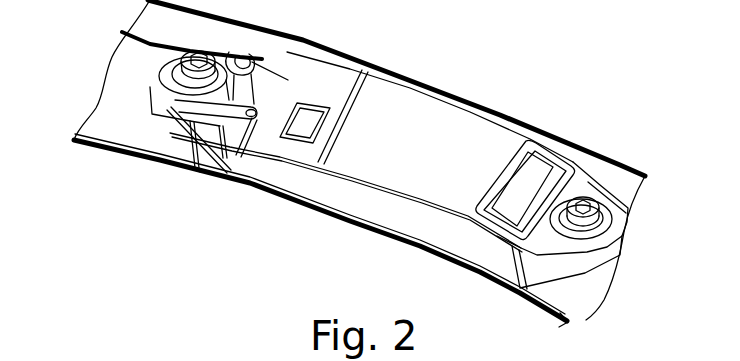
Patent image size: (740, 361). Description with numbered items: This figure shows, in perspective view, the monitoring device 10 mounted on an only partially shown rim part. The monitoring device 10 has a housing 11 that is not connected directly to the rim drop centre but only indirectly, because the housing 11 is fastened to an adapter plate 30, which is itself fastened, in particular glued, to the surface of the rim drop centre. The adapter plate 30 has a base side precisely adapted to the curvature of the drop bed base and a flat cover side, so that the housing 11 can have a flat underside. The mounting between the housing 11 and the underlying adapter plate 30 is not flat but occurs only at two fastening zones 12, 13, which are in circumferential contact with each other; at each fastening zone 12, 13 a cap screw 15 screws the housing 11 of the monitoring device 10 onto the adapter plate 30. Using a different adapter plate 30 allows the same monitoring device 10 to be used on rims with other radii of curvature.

The monitoring device 10 is at (558, 96).
The housing 11 is at (410, 130).
The fastening zone 12 is at (175, 114).
The fastening zone 13 is at (566, 258).
The cap screw 15 is at (163, 68).
The adapter plate 30 is at (189, 132).